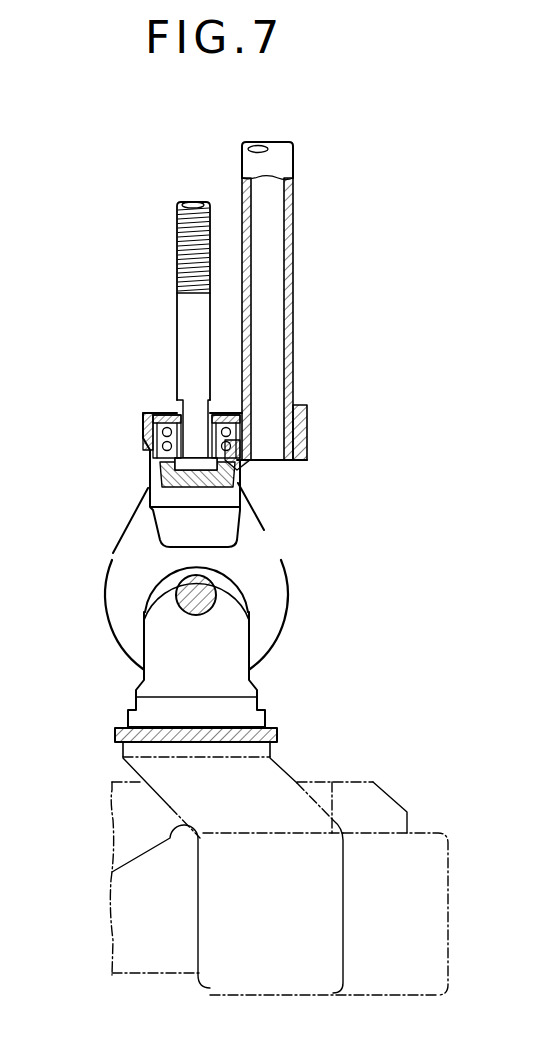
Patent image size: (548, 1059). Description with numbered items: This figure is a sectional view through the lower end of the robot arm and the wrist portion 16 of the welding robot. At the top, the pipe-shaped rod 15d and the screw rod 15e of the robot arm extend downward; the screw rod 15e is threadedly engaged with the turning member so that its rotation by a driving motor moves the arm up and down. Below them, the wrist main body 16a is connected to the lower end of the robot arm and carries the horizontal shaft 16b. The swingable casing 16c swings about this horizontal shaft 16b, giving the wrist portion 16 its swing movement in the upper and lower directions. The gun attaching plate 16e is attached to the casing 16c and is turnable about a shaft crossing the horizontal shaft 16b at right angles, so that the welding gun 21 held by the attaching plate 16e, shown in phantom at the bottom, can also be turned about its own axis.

The pipe-shaped rod 15d is at (293, 220).
The screw rod 15e is at (184, 317).
The wrist portion 16 is at (284, 544).
The wrist main body 16a is at (120, 540).
The horizontal shaft 16b is at (206, 613).
The swingable casing 16c is at (145, 680).
The gun attaching plate 16e is at (132, 730).
The welding gun 21 is at (362, 792).